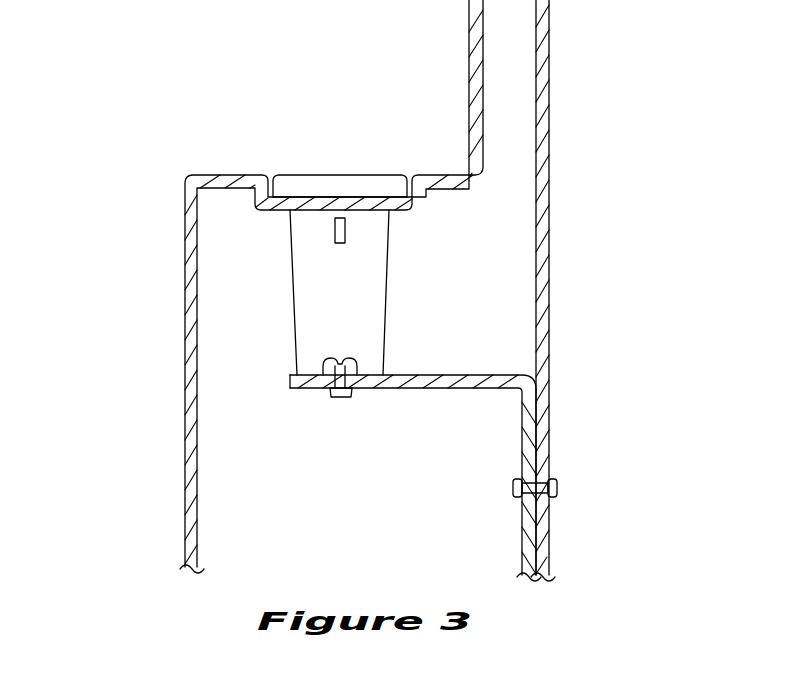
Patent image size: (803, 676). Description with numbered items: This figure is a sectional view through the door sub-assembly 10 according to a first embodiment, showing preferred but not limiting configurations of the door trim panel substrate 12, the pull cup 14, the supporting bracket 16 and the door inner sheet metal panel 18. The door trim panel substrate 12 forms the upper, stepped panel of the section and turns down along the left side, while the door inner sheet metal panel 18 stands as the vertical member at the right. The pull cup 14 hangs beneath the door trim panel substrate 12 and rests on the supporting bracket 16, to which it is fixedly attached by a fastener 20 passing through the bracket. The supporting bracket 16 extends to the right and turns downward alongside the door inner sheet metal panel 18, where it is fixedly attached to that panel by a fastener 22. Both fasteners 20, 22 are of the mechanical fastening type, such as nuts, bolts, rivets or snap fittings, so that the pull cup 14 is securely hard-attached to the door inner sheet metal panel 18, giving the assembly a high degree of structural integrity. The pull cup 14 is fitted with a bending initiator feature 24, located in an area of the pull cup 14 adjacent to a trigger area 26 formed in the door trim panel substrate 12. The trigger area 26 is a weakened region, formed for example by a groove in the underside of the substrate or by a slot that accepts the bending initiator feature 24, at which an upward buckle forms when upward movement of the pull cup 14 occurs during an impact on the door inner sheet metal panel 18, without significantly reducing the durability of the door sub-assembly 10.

The door sub-assembly 10 is at (128, 223).
The door trim panel substrate 12 is at (183, 410).
The pull cup 14 is at (310, 337).
The supporting bracket 16 is at (458, 390).
The door inner sheet metal panel 18 is at (550, 177).
The fastener 20 is at (338, 397).
The fastener 22 is at (557, 492).
The bending initiator feature 24 is at (345, 240).
The trigger area 26 is at (320, 198).